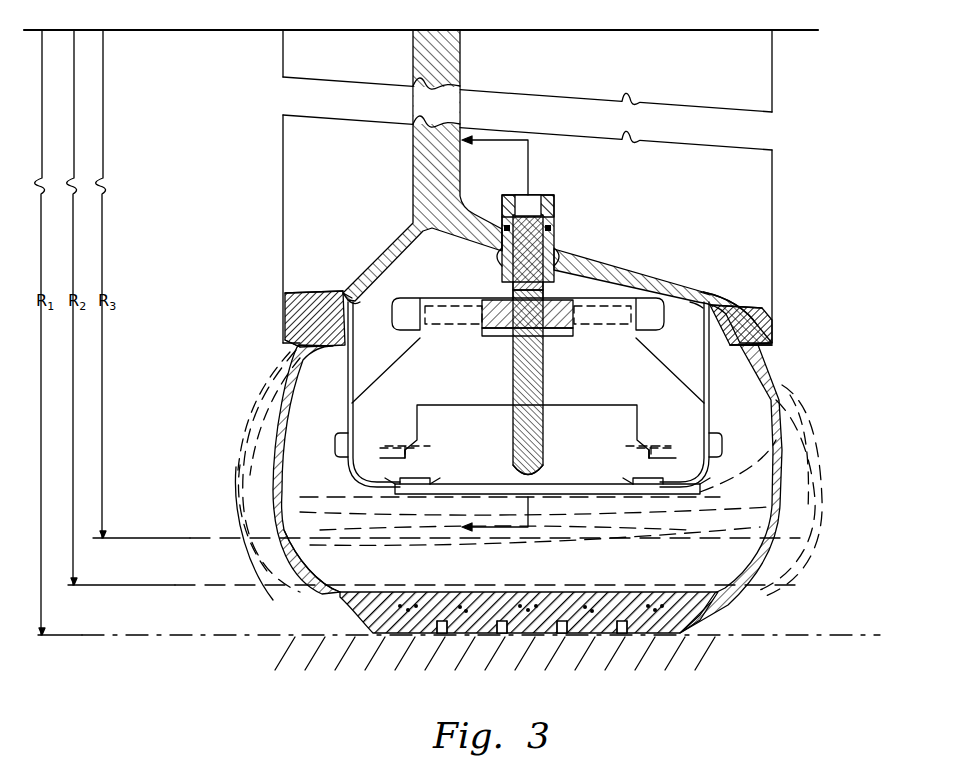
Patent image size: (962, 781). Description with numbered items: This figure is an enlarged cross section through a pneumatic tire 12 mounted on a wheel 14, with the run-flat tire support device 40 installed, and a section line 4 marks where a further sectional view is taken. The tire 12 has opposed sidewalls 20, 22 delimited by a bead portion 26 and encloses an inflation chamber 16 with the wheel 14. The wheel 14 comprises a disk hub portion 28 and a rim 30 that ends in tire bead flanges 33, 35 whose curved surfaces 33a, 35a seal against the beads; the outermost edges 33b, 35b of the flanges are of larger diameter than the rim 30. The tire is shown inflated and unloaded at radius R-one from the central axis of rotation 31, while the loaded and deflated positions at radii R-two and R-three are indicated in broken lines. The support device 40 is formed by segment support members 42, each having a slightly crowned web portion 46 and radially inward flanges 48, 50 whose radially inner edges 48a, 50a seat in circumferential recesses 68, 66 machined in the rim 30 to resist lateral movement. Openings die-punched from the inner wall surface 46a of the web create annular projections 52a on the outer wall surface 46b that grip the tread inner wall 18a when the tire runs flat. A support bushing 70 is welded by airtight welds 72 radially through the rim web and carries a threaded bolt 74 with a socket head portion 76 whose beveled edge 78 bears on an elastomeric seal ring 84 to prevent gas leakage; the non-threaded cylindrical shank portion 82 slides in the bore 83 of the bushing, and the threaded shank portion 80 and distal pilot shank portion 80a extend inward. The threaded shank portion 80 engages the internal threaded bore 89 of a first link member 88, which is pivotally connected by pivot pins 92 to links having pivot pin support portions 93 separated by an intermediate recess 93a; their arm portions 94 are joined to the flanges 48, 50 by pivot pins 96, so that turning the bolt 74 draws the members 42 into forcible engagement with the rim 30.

The section line 4- 4 is at (495, 333).
The pneumatic tire 12 is at (828, 412).
The wheel 14 is at (453, 132).
The inflation chamber 16 is at (560, 592).
The tread inner wall 18a is at (722, 490).
The sidewall 20 is at (262, 412).
The sidewall 22 is at (822, 492).
The bead portion 26 is at (722, 292).
The disk hub portion 28 is at (412, 144).
The rim 30 is at (640, 270).
The central axis of rotation 31 is at (168, 36).
The tire bead flange 33 is at (290, 310).
The curved surface 33a is at (305, 294).
The outermost edge 33b is at (288, 338).
The tire bead flange 35 is at (760, 322).
The curved surface 35a is at (748, 306).
The outermost edge 35b is at (772, 342).
The tire support device 40 is at (780, 386).
The segment support member 42 is at (304, 572).
The web portion 46 is at (455, 494).
The inner wall surface 46a is at (442, 485).
The outer wall surface 46b is at (480, 531).
The flange 48 is at (712, 420).
The radially inner edge 48a is at (716, 290).
The flange 50 is at (345, 384).
The radially inner edge 50a is at (352, 298).
The annular projection 52a is at (402, 495).
The recess 66 is at (358, 302).
The recess 68 is at (692, 300).
The support bushing 70 is at (556, 236).
The airtight weld 72 is at (500, 230).
The threaded bolt 74 is at (554, 207).
The socket head portion 76 is at (540, 198).
The beveled edge 78 is at (508, 226).
The threaded shank portion 80 is at (514, 422).
The distal pilot shank portion 80a is at (540, 476).
The non-threaded cylindrical shank portion 82 is at (512, 290).
The bore 83 is at (514, 284).
The elastomeric seal ring 84 is at (556, 262).
The first link member 88 is at (500, 336).
The internal threaded bore 89 is at (546, 284).
The pivot pin 92 is at (598, 318).
The pivot pin support portion 93 is at (420, 314).
The intermediate recess 93a is at (498, 330).
The arm portion 94 is at (420, 420).
The pivot pin 96 is at (379, 440).